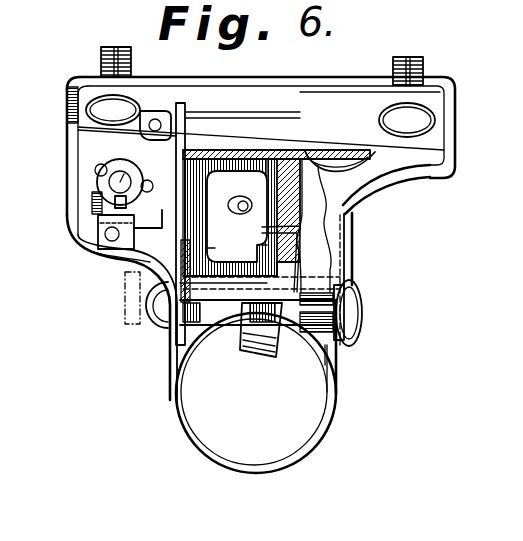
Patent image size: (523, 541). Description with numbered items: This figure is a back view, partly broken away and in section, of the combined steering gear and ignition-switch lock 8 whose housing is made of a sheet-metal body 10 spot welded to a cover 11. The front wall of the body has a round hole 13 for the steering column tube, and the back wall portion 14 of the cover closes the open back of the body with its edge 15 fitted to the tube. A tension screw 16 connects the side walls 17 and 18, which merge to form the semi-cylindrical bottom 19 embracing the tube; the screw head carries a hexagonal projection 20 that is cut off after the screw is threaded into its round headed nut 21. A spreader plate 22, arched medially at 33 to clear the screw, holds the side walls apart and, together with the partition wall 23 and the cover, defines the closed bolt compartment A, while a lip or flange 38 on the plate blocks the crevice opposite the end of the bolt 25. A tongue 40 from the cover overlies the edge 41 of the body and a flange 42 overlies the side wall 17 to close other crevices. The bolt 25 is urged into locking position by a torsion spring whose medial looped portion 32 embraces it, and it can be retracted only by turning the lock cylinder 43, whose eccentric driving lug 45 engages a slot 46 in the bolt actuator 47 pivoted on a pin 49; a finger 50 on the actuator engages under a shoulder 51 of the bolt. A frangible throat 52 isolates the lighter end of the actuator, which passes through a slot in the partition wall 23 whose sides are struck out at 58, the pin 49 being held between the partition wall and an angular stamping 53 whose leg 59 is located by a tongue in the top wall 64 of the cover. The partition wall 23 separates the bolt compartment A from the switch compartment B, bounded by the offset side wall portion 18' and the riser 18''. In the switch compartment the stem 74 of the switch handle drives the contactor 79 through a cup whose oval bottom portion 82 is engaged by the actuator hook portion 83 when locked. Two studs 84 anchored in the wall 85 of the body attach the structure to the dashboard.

The combined steering gear and ignition-switch lock 8 is at (440, 75).
The body 10 is at (456, 96).
The cover 11 is at (333, 253).
The round hole 13 is at (327, 406).
The back wall portion 14 is at (327, 356).
The edge 15 is at (212, 303).
The tension screw 16 is at (150, 325).
The side wall 17 is at (340, 380).
The side wall 18 is at (122, 308).
The offset side wall portion 18' is at (49, 162).
The riser 18'' is at (86, 248).
The semi-cylindrical bottom 19 is at (255, 470).
The hexagonal projection 20 is at (120, 328).
The round headed nut 21 is at (351, 331).
The spreader plate 22 is at (238, 303).
The partition wall 23 is at (181, 105).
The bolt 25 is at (280, 345).
The medial looped portion 32 is at (313, 195).
The medially arched portion 33 is at (200, 303).
The lip or flange 38 is at (283, 320).
The tongue 40 is at (338, 280).
The edge 41 is at (356, 310).
The flange 42 is at (354, 222).
The lock cylinder 43 is at (240, 170).
The eccentric cam or driving lug 45 is at (243, 212).
The slot 46 is at (238, 200).
The bolt actuator 47 is at (211, 158).
The pin 49 is at (219, 248).
The finger 50 is at (262, 248).
The shoulder 51 is at (265, 230).
The frangible throat 52 is at (132, 266).
The angular stamping 53 is at (278, 162).
The struck-out sides of slot 58 is at (172, 113).
The leg 59 is at (268, 158).
The top wall 64 is at (197, 148).
The stem 74 is at (113, 110).
The contactor 79 is at (86, 166).
The bottom portion 82 is at (98, 184).
The hook portion 83 is at (95, 216).
The studs 84 is at (116, 58).
The wall 85 is at (350, 103).
The bolt compartment A is at (300, 180).
The switch compartment B is at (84, 145).